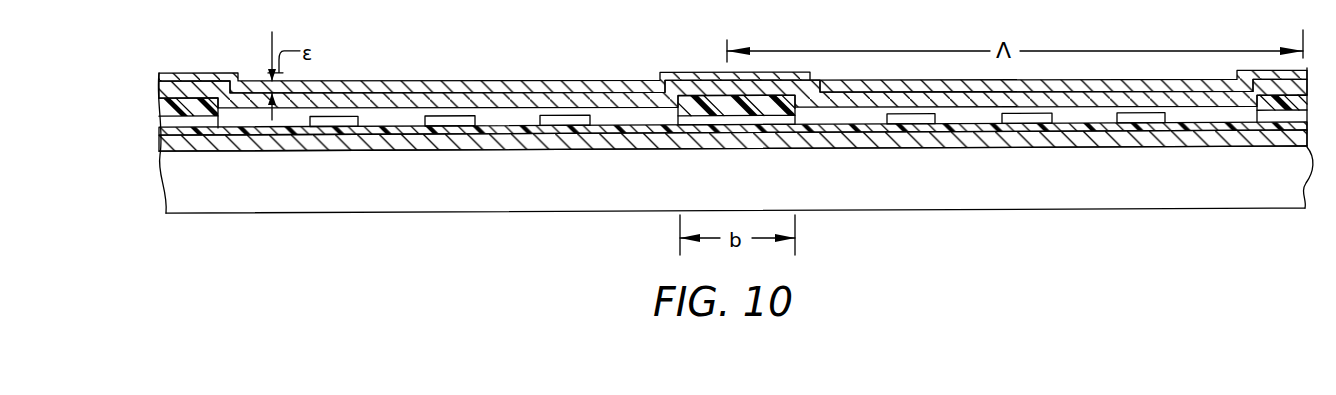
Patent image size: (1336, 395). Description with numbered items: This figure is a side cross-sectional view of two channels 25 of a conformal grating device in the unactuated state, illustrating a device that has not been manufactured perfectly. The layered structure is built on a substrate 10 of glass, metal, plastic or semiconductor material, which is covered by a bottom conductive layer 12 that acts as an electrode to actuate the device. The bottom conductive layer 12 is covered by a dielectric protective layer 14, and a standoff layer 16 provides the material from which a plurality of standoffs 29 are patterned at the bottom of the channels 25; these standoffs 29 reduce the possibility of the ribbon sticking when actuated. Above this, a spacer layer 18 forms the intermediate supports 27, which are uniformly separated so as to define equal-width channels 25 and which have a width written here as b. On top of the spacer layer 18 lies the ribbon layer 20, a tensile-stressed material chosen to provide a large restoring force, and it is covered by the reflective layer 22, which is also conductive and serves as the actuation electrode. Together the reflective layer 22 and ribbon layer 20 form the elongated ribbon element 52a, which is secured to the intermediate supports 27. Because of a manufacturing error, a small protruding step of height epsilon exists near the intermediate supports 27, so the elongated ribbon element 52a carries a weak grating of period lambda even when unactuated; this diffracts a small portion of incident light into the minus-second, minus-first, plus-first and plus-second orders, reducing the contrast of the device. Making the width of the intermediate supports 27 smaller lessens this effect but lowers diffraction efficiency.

The substrate 10 is at (173, 193).
The bottom conductive layer 12 is at (167, 146).
The dielectric protective layer 14 is at (165, 128).
The standoff layer 16 is at (170, 120).
The spacer layer 18 is at (162, 108).
The ribbon layer 20 is at (163, 88).
The reflective layer 22 is at (177, 72).
The channel 25 is at (638, 115).
The intermediate support 27 is at (687, 100).
The standoff 29 is at (437, 118).
The elongated ribbon element 52a is at (618, 80).